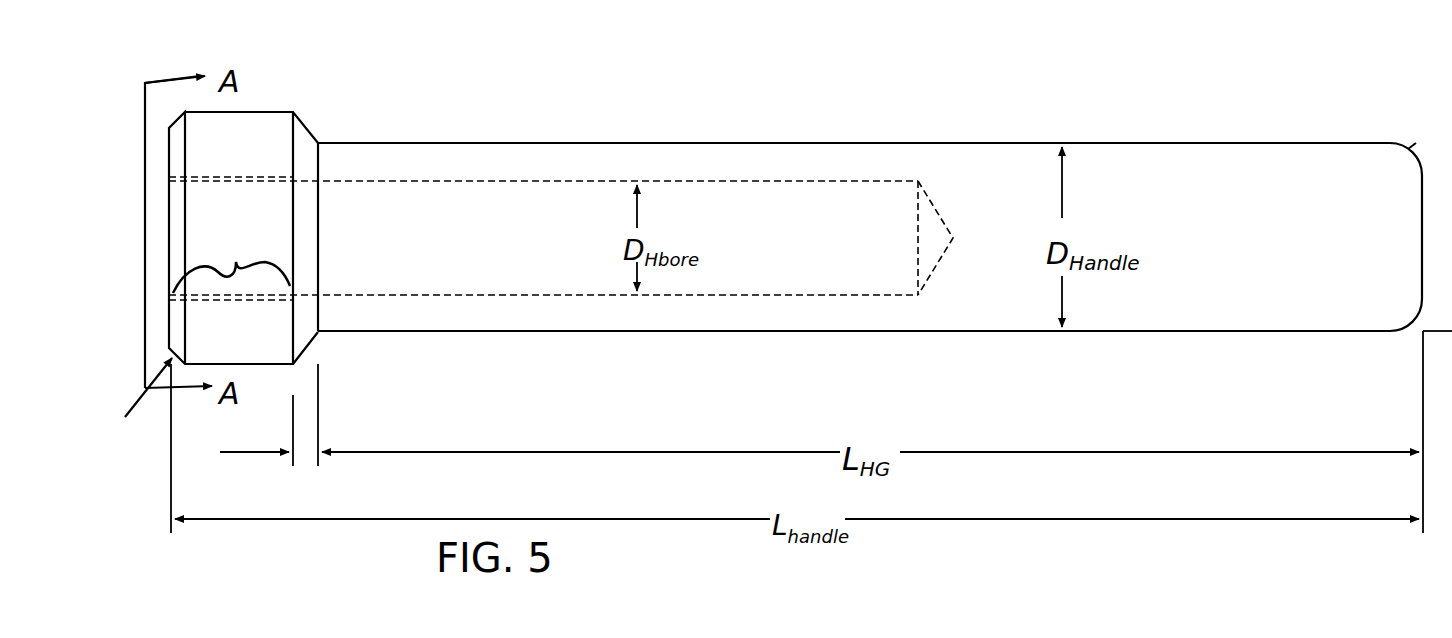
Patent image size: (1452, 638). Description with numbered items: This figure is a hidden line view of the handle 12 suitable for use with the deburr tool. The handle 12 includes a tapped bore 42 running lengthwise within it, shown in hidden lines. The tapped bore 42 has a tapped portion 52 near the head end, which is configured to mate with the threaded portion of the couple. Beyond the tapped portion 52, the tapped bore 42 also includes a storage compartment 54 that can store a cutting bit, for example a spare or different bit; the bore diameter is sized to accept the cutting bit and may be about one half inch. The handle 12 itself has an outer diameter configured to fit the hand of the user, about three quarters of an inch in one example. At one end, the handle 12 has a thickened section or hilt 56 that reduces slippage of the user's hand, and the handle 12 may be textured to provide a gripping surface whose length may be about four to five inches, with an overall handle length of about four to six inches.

The handle 12 is at (656, 391).
The tapped bore 42 is at (458, 264).
The tapped portion 52 is at (231, 259).
The storage compartment 54 is at (758, 263).
The hilt 56 is at (258, 364).